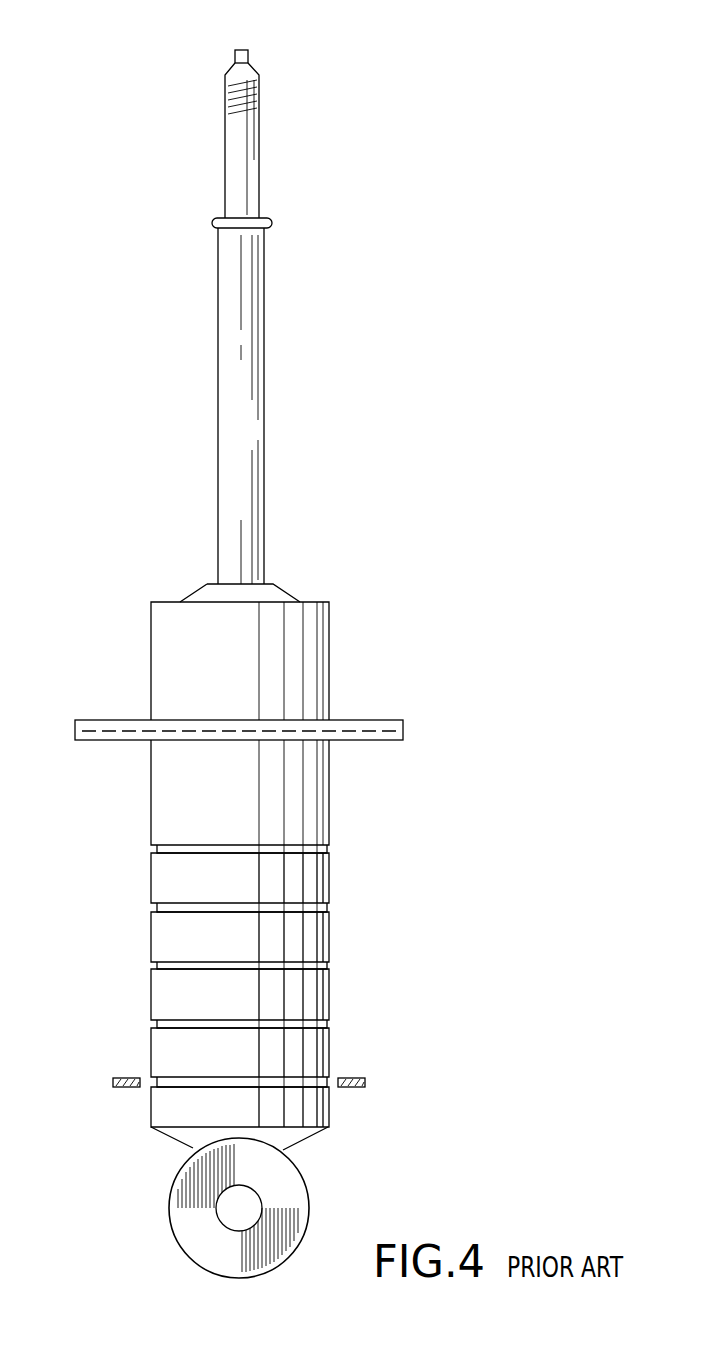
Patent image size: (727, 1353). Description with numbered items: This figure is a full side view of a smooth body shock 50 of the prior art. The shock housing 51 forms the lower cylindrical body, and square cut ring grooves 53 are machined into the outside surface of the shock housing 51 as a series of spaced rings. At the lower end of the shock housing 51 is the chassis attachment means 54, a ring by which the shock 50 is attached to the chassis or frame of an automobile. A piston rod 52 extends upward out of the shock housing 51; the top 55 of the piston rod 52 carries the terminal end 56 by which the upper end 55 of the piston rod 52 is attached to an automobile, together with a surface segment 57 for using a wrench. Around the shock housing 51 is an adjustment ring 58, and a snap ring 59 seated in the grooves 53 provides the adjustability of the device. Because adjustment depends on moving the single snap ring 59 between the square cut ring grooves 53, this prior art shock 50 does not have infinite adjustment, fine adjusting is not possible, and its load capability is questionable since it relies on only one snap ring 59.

The smooth body shock 50 is at (448, 563).
The shock housing 51 is at (151, 640).
The piston rod 52 is at (218, 505).
The square cut ring grooves 53 is at (152, 965).
The chassis attachment means 54 is at (170, 1205).
The top of the piston rod 55 is at (264, 478).
The terminal end 56 is at (225, 95).
The surface segment 57 is at (233, 62).
The adjustment ring 58 is at (405, 733).
The snap ring 59 is at (365, 1082).